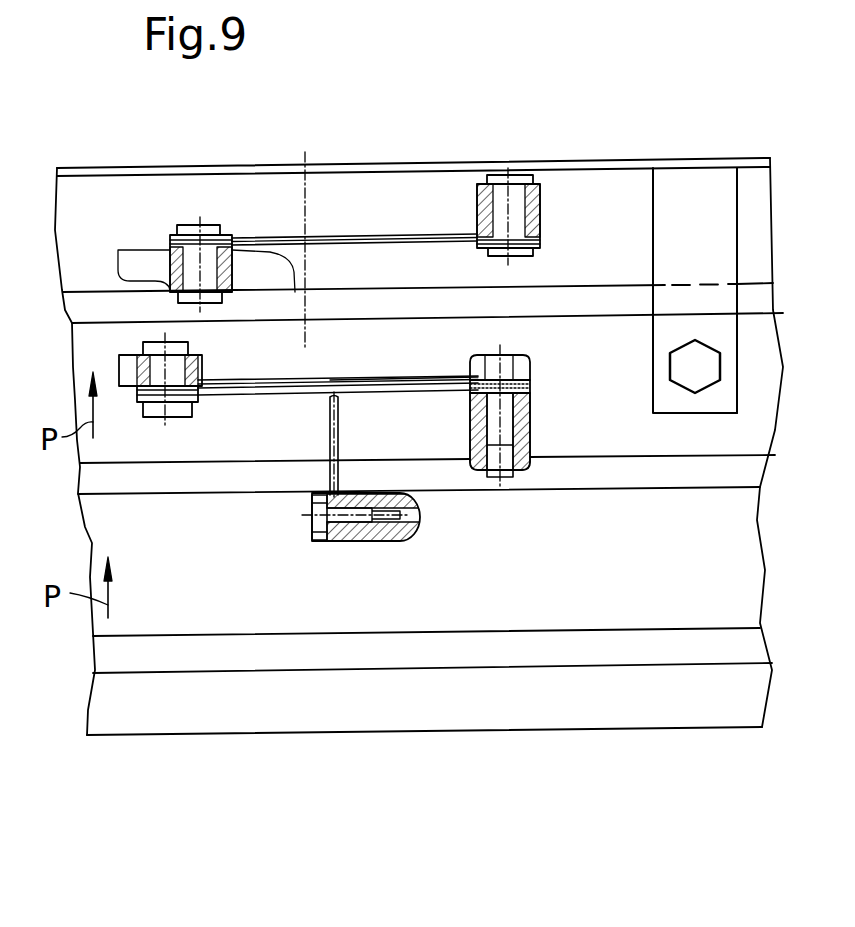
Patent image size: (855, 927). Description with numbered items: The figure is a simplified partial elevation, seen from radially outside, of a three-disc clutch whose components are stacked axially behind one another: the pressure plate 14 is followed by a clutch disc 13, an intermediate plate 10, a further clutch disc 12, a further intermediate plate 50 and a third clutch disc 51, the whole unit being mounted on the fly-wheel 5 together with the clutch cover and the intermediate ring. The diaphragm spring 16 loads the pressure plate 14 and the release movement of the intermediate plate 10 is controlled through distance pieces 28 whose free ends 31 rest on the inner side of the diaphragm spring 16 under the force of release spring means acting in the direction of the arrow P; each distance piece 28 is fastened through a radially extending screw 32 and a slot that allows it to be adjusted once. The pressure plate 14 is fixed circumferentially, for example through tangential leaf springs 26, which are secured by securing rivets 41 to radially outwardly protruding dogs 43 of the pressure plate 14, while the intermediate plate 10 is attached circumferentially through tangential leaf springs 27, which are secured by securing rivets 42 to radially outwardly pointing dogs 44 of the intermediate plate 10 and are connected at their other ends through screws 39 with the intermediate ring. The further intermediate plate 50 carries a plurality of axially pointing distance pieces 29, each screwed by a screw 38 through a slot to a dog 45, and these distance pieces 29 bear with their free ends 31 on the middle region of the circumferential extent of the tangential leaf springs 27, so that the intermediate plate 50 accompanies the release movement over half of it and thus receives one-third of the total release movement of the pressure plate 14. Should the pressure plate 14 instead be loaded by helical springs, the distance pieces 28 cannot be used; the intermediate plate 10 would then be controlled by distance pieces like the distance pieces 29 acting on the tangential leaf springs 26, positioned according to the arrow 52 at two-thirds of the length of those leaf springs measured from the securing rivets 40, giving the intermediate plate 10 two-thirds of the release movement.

The fly-wheel 5 is at (148, 693).
The intermediate plate 10 is at (85, 335).
The clutch disc 12 is at (593, 477).
The clutch disc 13 is at (735, 277).
The pressure plate 14 is at (755, 218).
The diaphragm spring 16 is at (575, 155).
The tangential leaf springs 26 is at (342, 377).
The tangential leaf springs 27 is at (383, 377).
The distance pieces 28 is at (690, 198).
The distance pieces 29 is at (427, 232).
The free end 31 is at (322, 377).
The screw 32 is at (688, 357).
The screw 38 is at (310, 540).
The screws 39 is at (512, 352).
The securing rivets 40 is at (503, 172).
The securing rivets 41 is at (218, 235).
The securing rivets 42 is at (157, 398).
The dogs 43 is at (168, 248).
The dogs 44 is at (142, 355).
The dog 45 is at (410, 540).
The intermediate plate 50 is at (347, 615).
The clutch disc 51 is at (725, 648).
The arrow 52 is at (318, 226).